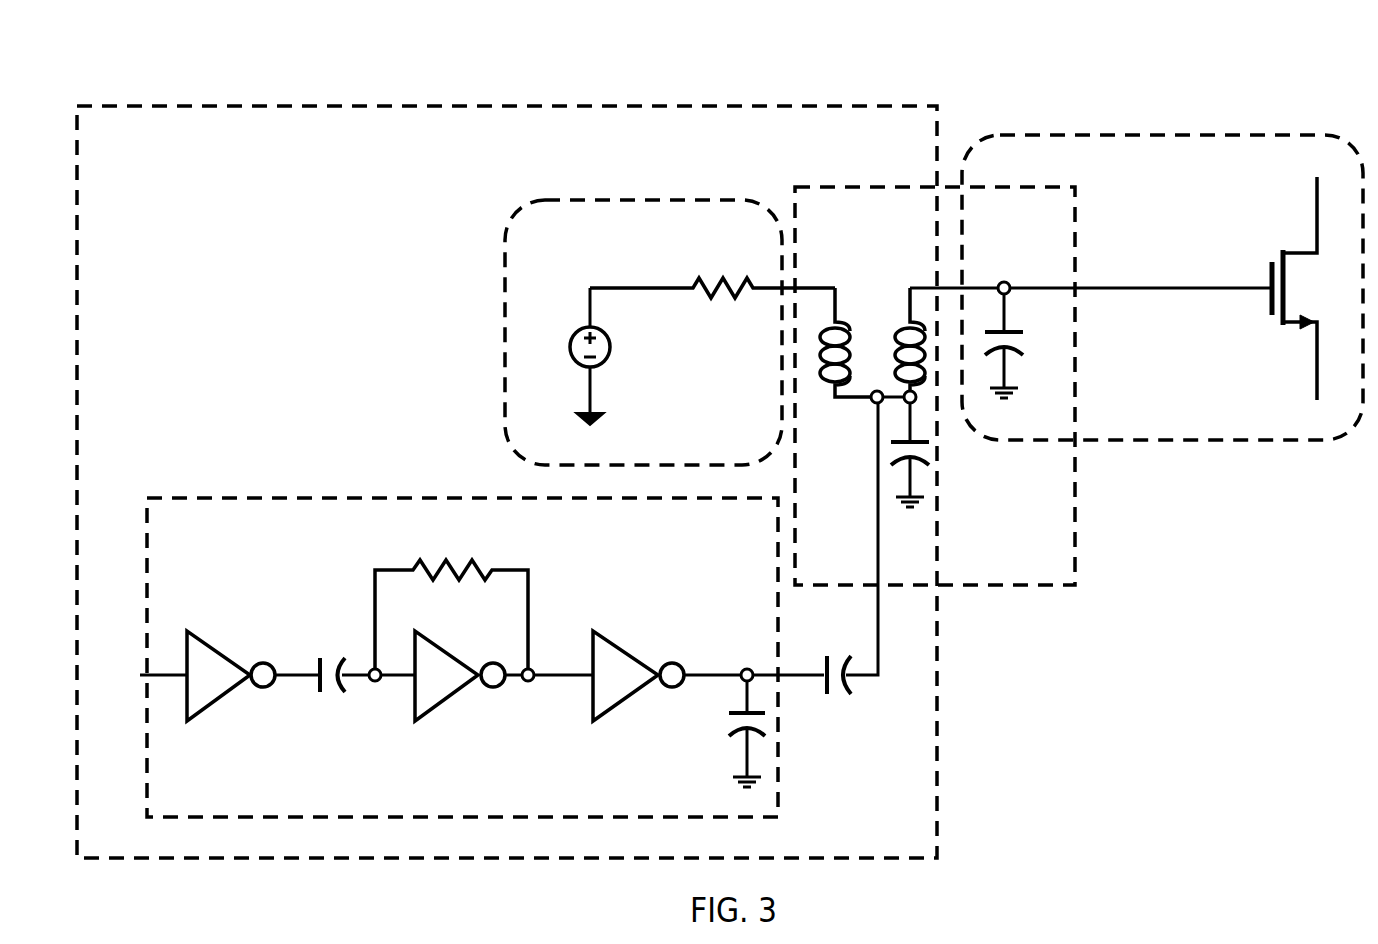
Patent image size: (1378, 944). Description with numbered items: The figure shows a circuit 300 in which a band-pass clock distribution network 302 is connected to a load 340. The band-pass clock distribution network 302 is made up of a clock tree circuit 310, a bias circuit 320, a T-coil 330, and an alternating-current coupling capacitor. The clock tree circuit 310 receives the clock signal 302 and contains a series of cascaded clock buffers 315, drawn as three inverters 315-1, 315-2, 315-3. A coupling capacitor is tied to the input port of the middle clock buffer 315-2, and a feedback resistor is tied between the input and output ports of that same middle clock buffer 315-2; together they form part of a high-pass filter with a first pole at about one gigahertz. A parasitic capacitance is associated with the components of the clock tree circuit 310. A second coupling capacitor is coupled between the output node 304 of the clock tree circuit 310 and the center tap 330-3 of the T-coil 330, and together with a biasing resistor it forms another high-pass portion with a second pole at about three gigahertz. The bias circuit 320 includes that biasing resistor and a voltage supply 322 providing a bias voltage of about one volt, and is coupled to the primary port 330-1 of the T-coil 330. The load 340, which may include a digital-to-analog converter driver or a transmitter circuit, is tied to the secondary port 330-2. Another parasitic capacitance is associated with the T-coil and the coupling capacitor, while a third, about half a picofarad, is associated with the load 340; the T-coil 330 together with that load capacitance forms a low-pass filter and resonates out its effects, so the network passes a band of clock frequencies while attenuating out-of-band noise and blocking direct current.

The circuit 300 is at (203, 58).
The band-pass clock distribution network 302 is at (363, 105).
The output node 304 is at (782, 663).
The clock tree circuit 310 is at (205, 497).
The clock buffers 315 is at (471, 688).
The clock buffer 315-1 is at (228, 703).
The middle clock buffer 315-2 is at (448, 697).
The clock buffer 315-3 is at (648, 642).
The bias circuit 320 is at (515, 222).
The voltage supply 322 is at (610, 356).
The T-coil 330 is at (1075, 560).
The primary port 330-1 is at (829, 278).
The secondary port 330-2 is at (908, 278).
The center tap 330-3 is at (866, 408).
The load 340 is at (1288, 134).